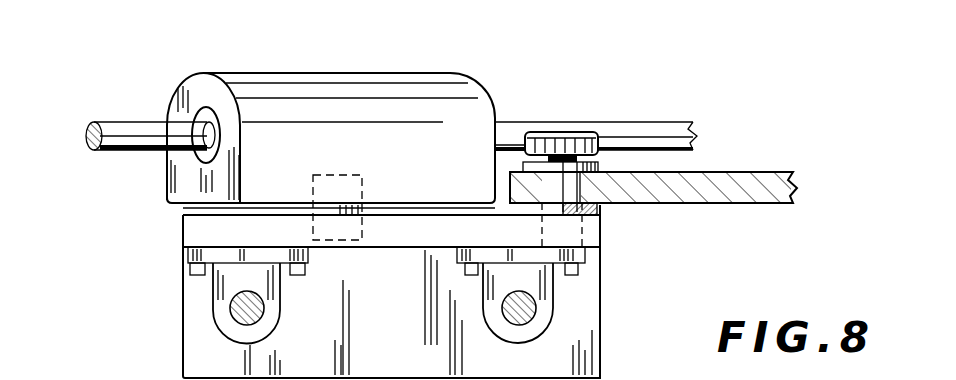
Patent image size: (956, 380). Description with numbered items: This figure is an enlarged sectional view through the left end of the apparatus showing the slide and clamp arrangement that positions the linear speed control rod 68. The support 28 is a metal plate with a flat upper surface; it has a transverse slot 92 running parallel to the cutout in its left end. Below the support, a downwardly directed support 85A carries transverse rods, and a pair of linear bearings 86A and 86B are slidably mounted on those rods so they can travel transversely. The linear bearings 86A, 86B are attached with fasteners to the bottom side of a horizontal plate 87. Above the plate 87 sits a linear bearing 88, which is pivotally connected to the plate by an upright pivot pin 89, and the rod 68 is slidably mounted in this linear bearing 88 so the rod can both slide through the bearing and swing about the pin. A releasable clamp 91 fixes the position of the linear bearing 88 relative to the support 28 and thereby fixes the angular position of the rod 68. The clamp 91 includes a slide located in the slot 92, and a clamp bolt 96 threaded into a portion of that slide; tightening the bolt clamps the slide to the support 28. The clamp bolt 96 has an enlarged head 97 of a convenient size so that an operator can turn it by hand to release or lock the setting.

The linear bearing 88 is at (276, 73).
The releasable clamp 91 is at (540, 108).
The linear speed control rod 68 is at (662, 132).
The enlarged head 97 is at (572, 142).
The support 28 is at (733, 185).
The clamp bolt 96 is at (568, 182).
The transverse slot 92 is at (583, 194).
The pivot pin 89 is at (360, 213).
The horizontal plate 87 is at (193, 231).
The downwardly directed support 85A is at (195, 350).
The linear bearing 86A is at (213, 310).
The linear bearing 86B is at (555, 318).